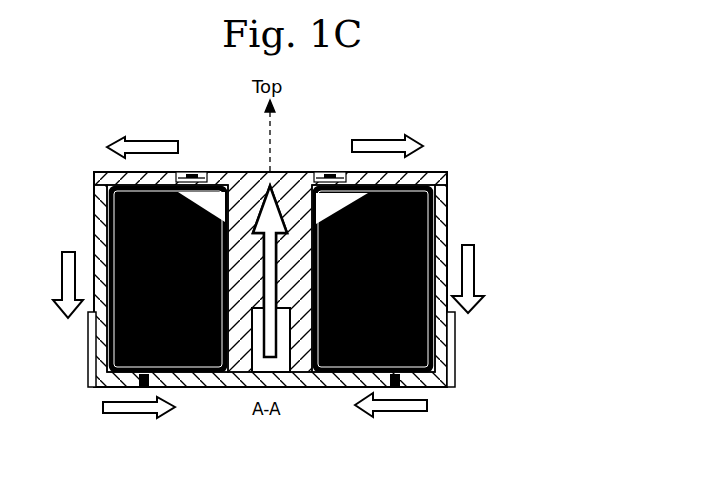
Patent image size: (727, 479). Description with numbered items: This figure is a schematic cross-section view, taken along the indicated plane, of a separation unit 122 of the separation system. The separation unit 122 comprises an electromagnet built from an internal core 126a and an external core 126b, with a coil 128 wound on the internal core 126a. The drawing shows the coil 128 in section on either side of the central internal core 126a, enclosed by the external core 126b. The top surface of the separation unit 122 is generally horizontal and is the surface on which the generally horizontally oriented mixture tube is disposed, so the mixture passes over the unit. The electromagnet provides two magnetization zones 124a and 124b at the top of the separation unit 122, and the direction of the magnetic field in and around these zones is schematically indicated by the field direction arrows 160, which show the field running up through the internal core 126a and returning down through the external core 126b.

The separation unit 122 is at (356, 102).
The magnetization zone 124a is at (199, 171).
The magnetization zone 124b is at (342, 169).
The internal core 126a is at (249, 368).
The external core 126b is at (92, 378).
The coil 128 is at (117, 232).
The field directions 160 is at (58, 303).